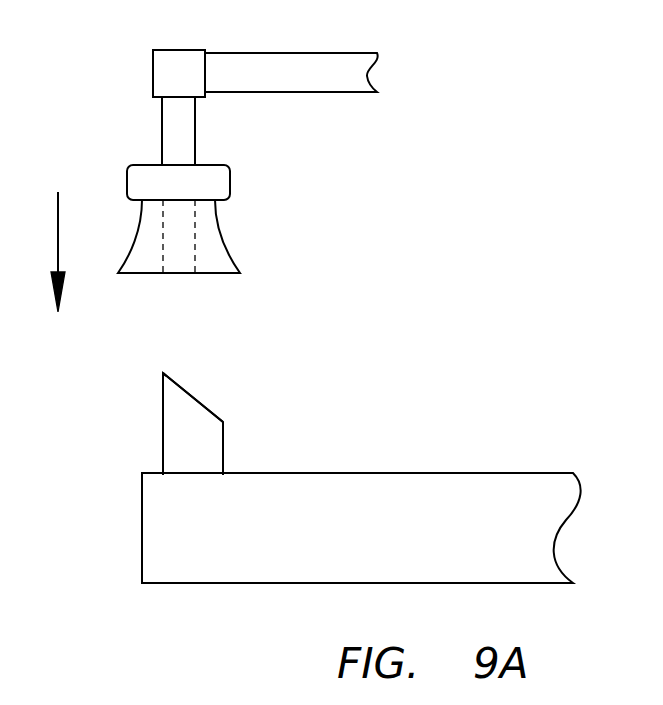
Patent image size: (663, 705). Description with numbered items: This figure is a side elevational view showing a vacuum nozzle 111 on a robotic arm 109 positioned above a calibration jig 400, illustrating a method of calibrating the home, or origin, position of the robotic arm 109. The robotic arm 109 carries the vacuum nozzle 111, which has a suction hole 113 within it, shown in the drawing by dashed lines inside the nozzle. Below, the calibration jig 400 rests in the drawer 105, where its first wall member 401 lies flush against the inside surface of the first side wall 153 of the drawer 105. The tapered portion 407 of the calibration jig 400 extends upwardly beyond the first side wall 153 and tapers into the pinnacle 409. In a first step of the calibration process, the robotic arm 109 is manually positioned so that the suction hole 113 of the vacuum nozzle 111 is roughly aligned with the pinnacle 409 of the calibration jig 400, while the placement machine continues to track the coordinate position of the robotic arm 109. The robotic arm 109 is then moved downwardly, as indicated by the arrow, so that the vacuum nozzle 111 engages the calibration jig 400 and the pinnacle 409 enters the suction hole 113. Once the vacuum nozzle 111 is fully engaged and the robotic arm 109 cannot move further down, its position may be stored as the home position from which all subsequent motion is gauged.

The robotic arm 109 is at (277, 62).
The vacuum nozzle 111 is at (205, 242).
The suction hole 113 is at (170, 258).
The drawer 105 is at (477, 322).
The calibration jig 400 is at (232, 351).
The pinnacle 409 is at (162, 372).
The tapered portion 407 is at (182, 410).
The first wall member 401 is at (202, 443).
The first side wall 153 is at (440, 473).